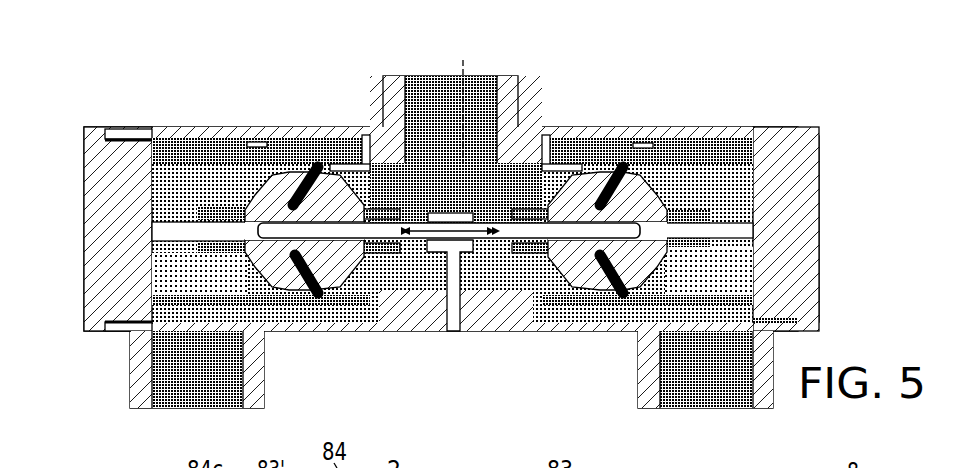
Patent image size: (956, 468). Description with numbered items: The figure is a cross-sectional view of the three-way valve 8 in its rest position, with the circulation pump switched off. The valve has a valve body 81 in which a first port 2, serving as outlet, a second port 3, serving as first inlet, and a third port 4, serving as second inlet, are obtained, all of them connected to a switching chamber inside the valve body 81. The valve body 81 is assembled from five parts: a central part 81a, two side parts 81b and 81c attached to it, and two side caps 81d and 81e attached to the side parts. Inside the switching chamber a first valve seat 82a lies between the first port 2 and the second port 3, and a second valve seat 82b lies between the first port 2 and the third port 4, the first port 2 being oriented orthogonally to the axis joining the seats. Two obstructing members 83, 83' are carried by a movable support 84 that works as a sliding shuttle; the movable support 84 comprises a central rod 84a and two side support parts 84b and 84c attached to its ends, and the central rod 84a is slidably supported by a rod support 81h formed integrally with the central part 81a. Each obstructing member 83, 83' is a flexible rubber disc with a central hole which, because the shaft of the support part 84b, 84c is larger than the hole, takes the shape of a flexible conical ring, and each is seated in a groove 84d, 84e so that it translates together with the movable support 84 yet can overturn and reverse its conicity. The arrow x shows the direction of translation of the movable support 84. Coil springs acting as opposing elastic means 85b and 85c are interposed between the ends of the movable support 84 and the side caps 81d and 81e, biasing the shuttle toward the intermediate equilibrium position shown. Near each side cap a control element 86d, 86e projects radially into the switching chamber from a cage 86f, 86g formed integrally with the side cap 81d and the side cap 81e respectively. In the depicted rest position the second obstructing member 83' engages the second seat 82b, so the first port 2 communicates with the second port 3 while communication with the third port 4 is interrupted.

The first port 2 is at (389, 76).
The second port 3 is at (763, 400).
The third port 4 is at (134, 410).
The three-way valve 8 is at (810, 105).
The valve body 81 is at (434, 338).
The central part 81a is at (485, 322).
The side part 81b is at (602, 333).
The side part 81c is at (277, 333).
The side cap 81d is at (795, 180).
The side cap 81e is at (84, 232).
The rod support 81h is at (452, 333).
The first valve seat 82a is at (560, 140).
The second valve seat 82b is at (310, 150).
The first obstructing member 83 is at (607, 155).
The second obstructing member 83' is at (304, 148).
The movable support 84 is at (370, 127).
The central rod 84a is at (383, 300).
The side support part 84b is at (665, 150).
The side support part 84c is at (207, 150).
The groove 84d is at (590, 290).
The groove 84e is at (303, 333).
The elastic means 85b is at (712, 132).
The elastic means 85c is at (128, 132).
The control element 86d is at (617, 140).
The control element 86e is at (229, 140).
The cage 86f is at (720, 266).
The cage 86g is at (180, 140).
The direction of translation x is at (464, 62).